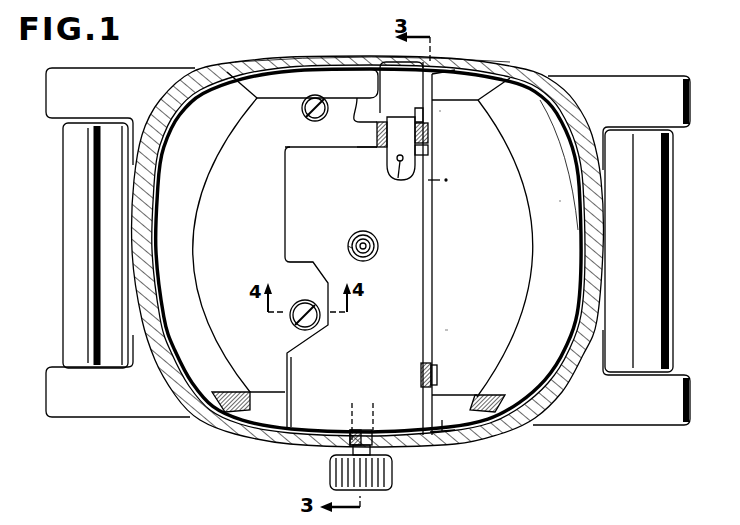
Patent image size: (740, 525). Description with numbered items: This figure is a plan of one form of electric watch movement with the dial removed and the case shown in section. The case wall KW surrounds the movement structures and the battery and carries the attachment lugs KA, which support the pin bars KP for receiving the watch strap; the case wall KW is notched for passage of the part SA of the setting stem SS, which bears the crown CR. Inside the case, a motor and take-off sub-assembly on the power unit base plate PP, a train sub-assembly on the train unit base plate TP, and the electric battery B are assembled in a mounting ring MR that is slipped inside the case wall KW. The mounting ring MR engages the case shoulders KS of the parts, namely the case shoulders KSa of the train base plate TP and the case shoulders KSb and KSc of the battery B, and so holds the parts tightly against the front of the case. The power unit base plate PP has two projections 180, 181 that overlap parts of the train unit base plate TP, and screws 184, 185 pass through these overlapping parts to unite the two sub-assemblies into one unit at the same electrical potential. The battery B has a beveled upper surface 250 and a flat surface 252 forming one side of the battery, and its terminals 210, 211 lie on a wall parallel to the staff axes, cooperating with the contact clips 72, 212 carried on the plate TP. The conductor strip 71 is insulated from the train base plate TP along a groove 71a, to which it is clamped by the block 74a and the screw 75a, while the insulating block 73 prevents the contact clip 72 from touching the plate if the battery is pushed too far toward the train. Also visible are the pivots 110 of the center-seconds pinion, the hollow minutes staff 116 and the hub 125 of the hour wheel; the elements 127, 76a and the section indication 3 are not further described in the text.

The attachment lugs KA is at (123, 78).
The pin bars KP is at (72, 205).
The case shoulders KS is at (172, 120).
The case shoulders of train base plate KSa is at (347, 60).
The case shoulder of battery KSb is at (450, 58).
The case shoulder of battery KSc is at (556, 128).
The case wall KW is at (300, 57).
The mounting ring MR is at (248, 67).
The power unit base plate PP is at (363, 234).
The train unit base plate TP is at (338, 287).
The electric battery B is at (460, 216).
The flat surface 252 is at (467, 337).
The beveled upper surface 250 is at (455, 255).
The crown CR is at (347, 470).
The setting stem part SA is at (372, 448).
The setting stem SS is at (365, 420).
The screw 185 is at (312, 97).
The screw 184 is at (305, 302).
The projection 181 is at (312, 152).
The projection 180 is at (300, 270).
The hub 125 is at (373, 232).
The spring winding 127 is at (378, 237).
The hollow minutes staff 116 is at (375, 255).
The pivots 110 is at (360, 247).
The conductor strip 71 is at (375, 127).
The groove 71a is at (377, 152).
The spring hook 76a is at (387, 125).
The insulating block 73 is at (415, 113).
The block 74a is at (405, 176).
The screw 75a is at (400, 163).
The contact clip 72 is at (427, 140).
The battery terminal 210 is at (430, 128).
The battery terminal 211 is at (432, 367).
The contact clip 212 is at (418, 372).
The case cushion 3 is at (562, 277).